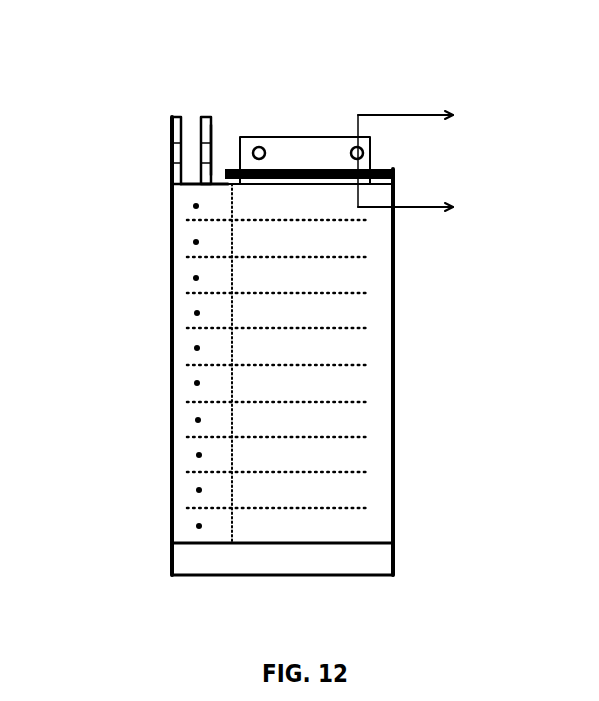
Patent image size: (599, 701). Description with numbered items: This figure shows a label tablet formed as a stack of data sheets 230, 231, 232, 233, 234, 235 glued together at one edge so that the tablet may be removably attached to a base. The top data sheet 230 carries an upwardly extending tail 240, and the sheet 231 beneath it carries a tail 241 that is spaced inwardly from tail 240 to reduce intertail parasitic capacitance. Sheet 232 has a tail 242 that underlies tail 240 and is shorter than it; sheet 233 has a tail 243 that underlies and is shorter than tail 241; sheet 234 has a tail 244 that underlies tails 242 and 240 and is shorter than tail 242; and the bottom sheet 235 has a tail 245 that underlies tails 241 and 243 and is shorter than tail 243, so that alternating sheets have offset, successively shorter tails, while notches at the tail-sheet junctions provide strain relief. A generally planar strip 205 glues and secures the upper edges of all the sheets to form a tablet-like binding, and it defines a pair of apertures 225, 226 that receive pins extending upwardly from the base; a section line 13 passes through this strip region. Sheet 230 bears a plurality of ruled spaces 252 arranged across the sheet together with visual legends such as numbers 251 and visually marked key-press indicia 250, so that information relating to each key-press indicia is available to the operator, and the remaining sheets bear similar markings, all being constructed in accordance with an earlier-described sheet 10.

The sheet 10 is at (83, 525).
The section line 13- 13 is at (423, 162).
The strip 205 is at (308, 137).
The aperture 225 is at (263, 147).
The aperture 226 is at (350, 147).
The data sheet 230 is at (382, 350).
The sheet 231 is at (395, 397).
The sheet 232 is at (395, 445).
The sheet 233 is at (395, 485).
The sheet 234 is at (395, 532).
The sheet 235 is at (395, 555).
The tail 240 is at (176, 117).
The tail 241 is at (206, 117).
The tail 242 is at (172, 155).
The tail 243 is at (212, 147).
The tail 244 is at (172, 184).
The tail 245 is at (192, 167).
The key-press indicia 250 is at (195, 243).
The numbers 251 is at (207, 342).
The ruled spaces 252 is at (363, 277).